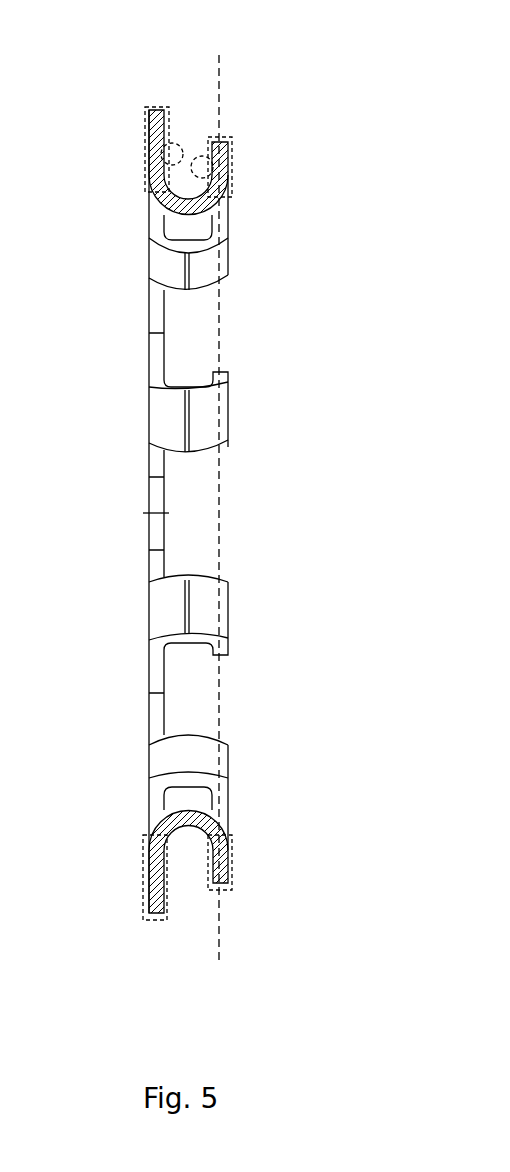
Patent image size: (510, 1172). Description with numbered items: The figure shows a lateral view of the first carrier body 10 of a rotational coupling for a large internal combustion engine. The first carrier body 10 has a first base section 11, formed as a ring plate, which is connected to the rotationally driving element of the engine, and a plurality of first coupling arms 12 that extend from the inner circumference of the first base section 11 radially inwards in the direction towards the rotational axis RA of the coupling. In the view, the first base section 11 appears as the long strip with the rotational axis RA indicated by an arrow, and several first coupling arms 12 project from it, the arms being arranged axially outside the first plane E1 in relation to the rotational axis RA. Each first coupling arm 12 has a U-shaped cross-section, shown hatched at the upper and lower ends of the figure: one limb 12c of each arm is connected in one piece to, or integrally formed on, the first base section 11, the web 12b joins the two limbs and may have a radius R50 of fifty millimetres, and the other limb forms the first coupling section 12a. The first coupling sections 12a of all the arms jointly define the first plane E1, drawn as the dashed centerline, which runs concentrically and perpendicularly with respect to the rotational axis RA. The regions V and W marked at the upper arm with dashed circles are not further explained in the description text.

The first carrier body 10 is at (352, 74).
The first base section 11 is at (155, 300).
The first coupling arm 12 is at (188, 422).
The first coupling section 12a is at (230, 378).
The web 12b is at (213, 428).
The limb 12c is at (158, 397).
The rotational axis RA is at (138, 515).
The radius R50 is at (188, 195).
The wall region V is at (176, 136).
The wall region W is at (204, 152).
The first plane E1 is at (222, 945).